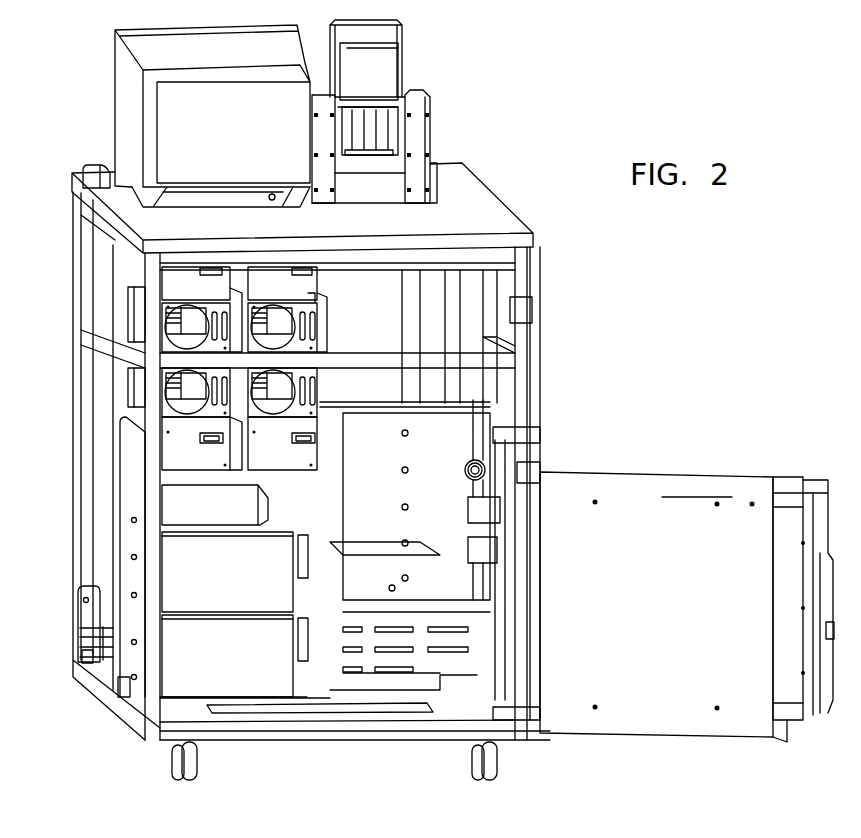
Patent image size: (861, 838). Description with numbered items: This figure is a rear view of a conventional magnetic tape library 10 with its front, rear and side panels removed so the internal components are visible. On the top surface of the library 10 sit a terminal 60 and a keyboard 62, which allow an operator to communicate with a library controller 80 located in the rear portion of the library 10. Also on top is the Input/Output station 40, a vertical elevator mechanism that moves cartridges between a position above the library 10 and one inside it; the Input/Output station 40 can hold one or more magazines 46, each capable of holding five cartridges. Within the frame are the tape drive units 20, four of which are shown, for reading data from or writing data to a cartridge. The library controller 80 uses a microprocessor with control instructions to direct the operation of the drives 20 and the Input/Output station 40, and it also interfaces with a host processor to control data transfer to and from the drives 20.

The magnetic tape library 10 is at (360, 810).
The tape drive unit 20 is at (128, 305).
The Input/Output station 40 is at (417, 43).
The magazine 46 is at (395, 130).
The terminal 60 is at (115, 62).
The keyboard 62 is at (90, 165).
The library controller 80 is at (790, 477).